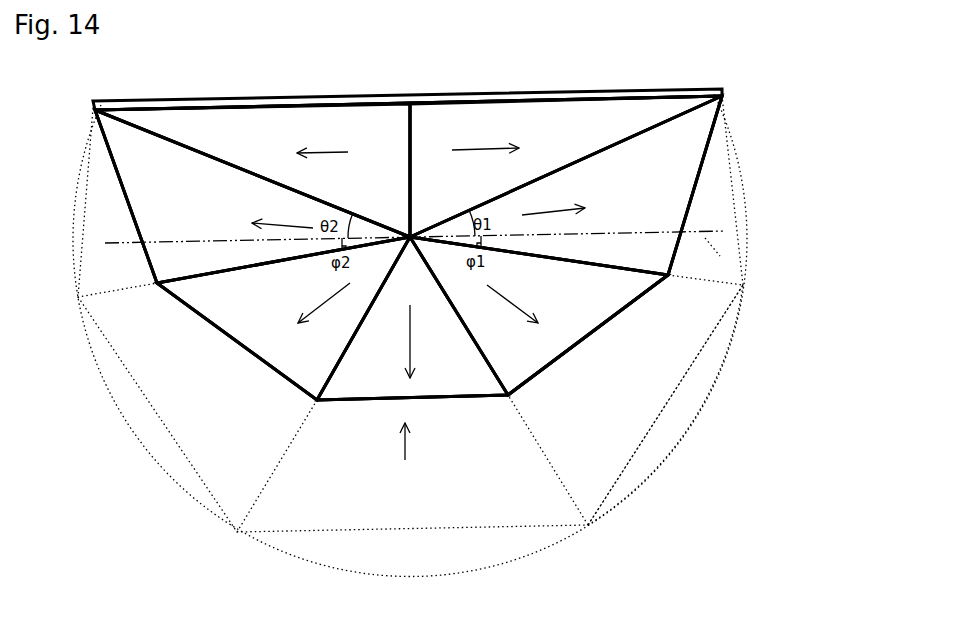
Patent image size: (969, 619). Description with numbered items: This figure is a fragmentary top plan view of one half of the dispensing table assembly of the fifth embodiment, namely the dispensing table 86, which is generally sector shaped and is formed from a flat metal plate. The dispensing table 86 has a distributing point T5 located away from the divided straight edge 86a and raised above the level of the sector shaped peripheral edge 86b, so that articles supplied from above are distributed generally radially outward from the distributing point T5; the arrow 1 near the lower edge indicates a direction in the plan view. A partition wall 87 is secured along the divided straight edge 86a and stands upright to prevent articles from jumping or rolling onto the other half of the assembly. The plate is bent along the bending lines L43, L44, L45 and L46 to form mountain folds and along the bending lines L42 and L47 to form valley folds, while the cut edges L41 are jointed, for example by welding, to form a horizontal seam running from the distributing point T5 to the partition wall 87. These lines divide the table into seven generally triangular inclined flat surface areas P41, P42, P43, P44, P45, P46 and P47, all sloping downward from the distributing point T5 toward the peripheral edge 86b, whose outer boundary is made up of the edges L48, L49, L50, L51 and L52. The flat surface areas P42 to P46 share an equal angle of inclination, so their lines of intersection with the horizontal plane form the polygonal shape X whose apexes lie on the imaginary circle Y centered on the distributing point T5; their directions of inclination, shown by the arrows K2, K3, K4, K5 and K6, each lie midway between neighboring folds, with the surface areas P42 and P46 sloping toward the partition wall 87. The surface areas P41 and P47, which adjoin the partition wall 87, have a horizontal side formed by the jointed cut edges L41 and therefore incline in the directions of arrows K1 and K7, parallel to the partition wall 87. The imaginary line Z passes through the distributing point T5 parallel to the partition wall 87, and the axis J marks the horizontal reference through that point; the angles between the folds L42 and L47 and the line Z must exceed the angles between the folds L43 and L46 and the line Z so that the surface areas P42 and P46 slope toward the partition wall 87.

The dispensing table 86 is at (709, 79).
The divided straight edge 86a is at (273, 110).
The sector shaped peripheral edge 86b is at (613, 317).
The partition wall 87 is at (543, 89).
The incident light direction 1 is at (405, 452).
The inclined flat surface area P41 is at (470, 112).
The inclined flat surface area P42 is at (687, 167).
The inclined flat surface area P43 is at (540, 358).
The inclined flat surface area P44 is at (442, 393).
The inclined flat surface area P45 is at (282, 363).
The inclined flat surface area P46 is at (135, 185).
The inclined flat surface area P47 is at (362, 118).
The cut edge L41 is at (407, 137).
The bending line L42 is at (573, 165).
The bending line L43 is at (573, 265).
The bending line L44 is at (468, 333).
The bending line L45 is at (352, 330).
The bending line L46 is at (208, 278).
The bending line L47 is at (232, 163).
The outer edge L48 is at (683, 220).
The outer edge L49 is at (580, 343).
The outer edge L50 is at (370, 402).
The outer edge L51 is at (217, 333).
The outer edge L52 is at (140, 228).
The arrow indicating direction of inclination K1 is at (485, 163).
The arrow indicating direction of inclination K2 is at (553, 205).
The arrow indicating direction of inclination K3 is at (512, 300).
The arrow indicating direction of inclination K4 is at (422, 341).
The arrow indicating direction of inclination K5 is at (324, 301).
The arrow indicating direction of inclination K6 is at (282, 215).
The arrow indicating direction of inclination K7 is at (322, 166).
The distributing point T5 is at (408, 232).
The reference axis J is at (769, 218).
The polygonal shape X is at (648, 440).
The imaginary circle Y is at (665, 462).
The imaginary line Z is at (716, 257).